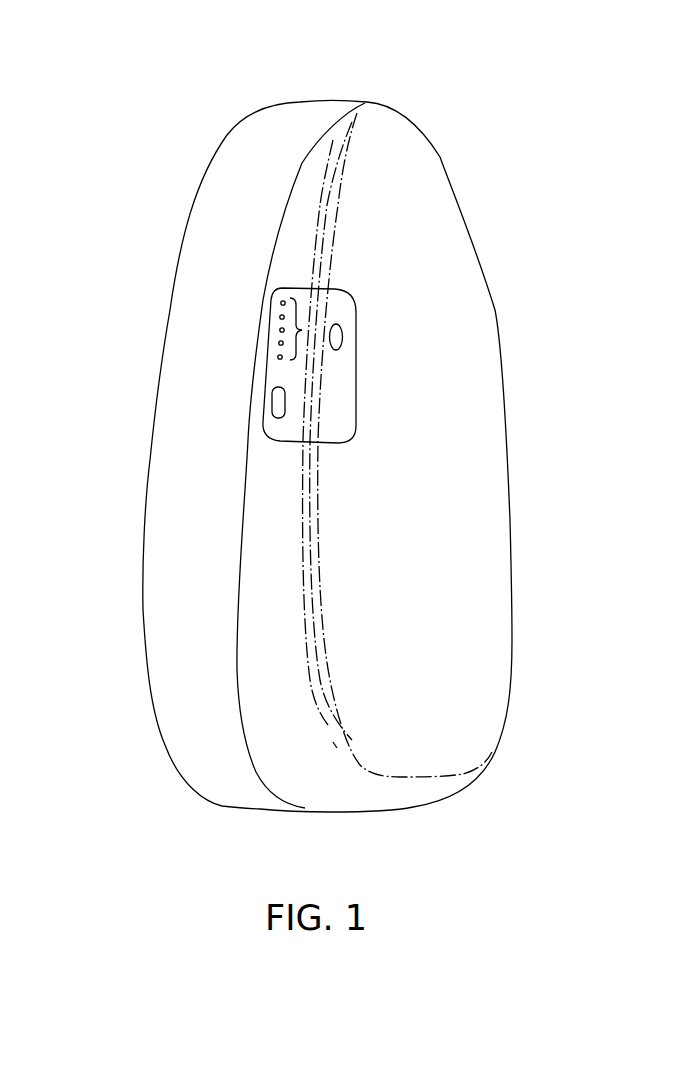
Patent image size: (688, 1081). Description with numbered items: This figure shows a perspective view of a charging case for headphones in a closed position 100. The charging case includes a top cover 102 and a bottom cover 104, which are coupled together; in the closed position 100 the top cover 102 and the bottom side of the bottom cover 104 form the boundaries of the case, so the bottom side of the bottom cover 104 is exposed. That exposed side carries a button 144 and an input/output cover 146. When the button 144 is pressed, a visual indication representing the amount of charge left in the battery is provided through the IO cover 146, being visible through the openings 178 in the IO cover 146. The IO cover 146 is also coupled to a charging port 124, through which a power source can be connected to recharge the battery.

The closed position 100 is at (319, 419).
The top cover 102 is at (185, 340).
The bottom cover 104 is at (480, 416).
The charging port 124 is at (279, 398).
The button 144 is at (343, 334).
The input/output (IO) cover 146 is at (280, 430).
The openings 178 is at (302, 330).